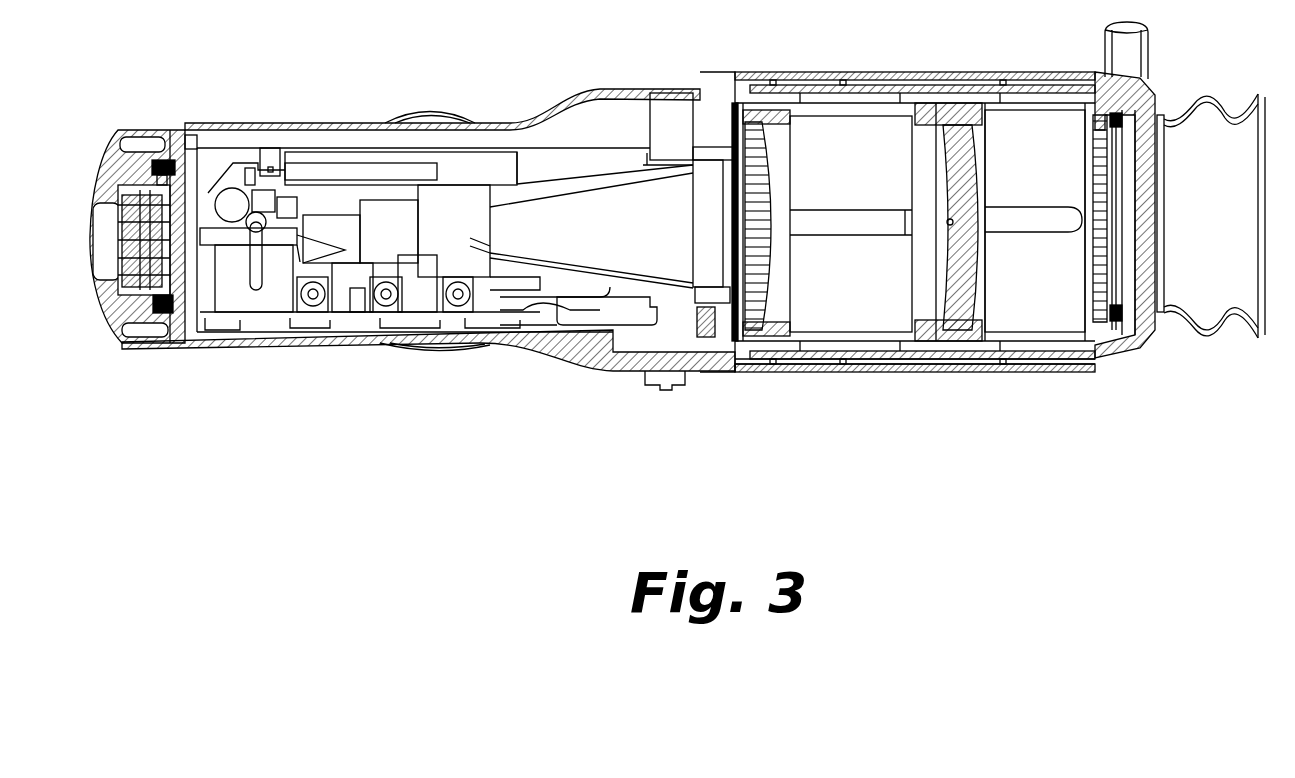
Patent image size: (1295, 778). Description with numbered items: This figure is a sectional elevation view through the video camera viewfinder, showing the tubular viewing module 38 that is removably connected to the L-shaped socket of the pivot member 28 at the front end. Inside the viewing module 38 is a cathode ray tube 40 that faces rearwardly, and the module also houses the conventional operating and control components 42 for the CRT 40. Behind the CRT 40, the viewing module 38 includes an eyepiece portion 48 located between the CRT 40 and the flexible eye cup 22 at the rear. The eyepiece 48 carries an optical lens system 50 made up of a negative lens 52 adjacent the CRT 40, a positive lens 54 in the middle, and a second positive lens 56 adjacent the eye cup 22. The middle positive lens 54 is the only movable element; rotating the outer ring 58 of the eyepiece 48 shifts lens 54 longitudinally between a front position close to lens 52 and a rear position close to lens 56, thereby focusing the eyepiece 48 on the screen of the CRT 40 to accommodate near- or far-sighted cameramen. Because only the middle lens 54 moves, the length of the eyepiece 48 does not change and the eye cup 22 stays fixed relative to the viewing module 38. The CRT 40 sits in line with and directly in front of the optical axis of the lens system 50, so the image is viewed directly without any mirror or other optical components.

The eye cup 22 is at (1215, 332).
The pivot member 28 is at (140, 130).
The viewing module 38 is at (632, 388).
The cathode ray tube 40 is at (637, 243).
The operating and control components 42 is at (345, 195).
The eyepiece portion 48 is at (908, 385).
The optical lens system 50 is at (870, 183).
The negative lens 52 is at (760, 262).
The positive lens 54 is at (950, 245).
The second positive lens 56 is at (1093, 170).
The outer ring 58 is at (880, 377).